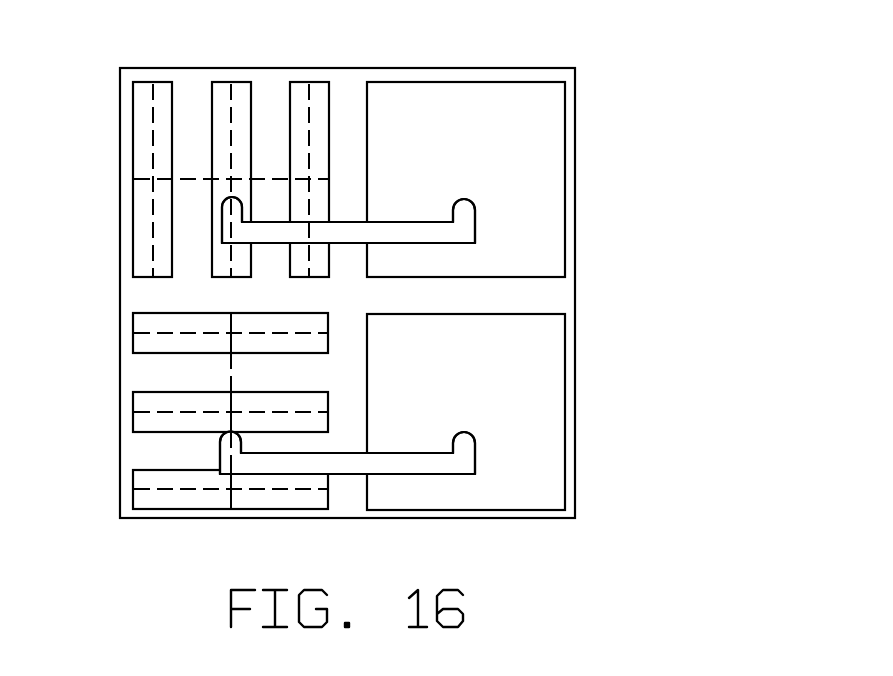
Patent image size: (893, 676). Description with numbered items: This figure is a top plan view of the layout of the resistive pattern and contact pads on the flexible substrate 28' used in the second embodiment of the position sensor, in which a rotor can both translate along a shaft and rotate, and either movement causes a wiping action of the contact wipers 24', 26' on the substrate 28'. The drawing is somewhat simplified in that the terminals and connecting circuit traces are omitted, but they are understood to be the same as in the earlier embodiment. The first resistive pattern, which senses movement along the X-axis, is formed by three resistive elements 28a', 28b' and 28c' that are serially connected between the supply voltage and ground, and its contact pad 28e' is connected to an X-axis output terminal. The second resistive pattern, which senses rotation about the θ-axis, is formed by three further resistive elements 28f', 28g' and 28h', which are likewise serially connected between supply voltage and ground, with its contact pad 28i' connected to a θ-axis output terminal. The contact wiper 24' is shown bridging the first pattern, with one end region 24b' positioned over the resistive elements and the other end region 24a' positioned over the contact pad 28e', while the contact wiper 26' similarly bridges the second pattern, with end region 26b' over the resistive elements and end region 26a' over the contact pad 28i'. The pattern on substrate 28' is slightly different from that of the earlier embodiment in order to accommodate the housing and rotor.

The flexible substrate 28' is at (394, 293).
The resistive element 28a' is at (105, 179).
The resistive element 28b' is at (215, 145).
The resistive element 28c' is at (307, 145).
The contact pad 28e' is at (466, 152).
The resistive element 28f' is at (186, 483).
The resistive element 28g' is at (186, 404).
The resistive element 28h' is at (186, 321).
The contact pad 28i' is at (521, 412).
The contact wiper 24' is at (348, 203).
The first conductor right loop end 24a' is at (494, 203).
The first conductor left loop end 24b' is at (149, 212).
The contact wiper 26' is at (347, 430).
The second conductor right loop end 26a' is at (495, 435).
The second conductor left loop end 26b' is at (199, 500).